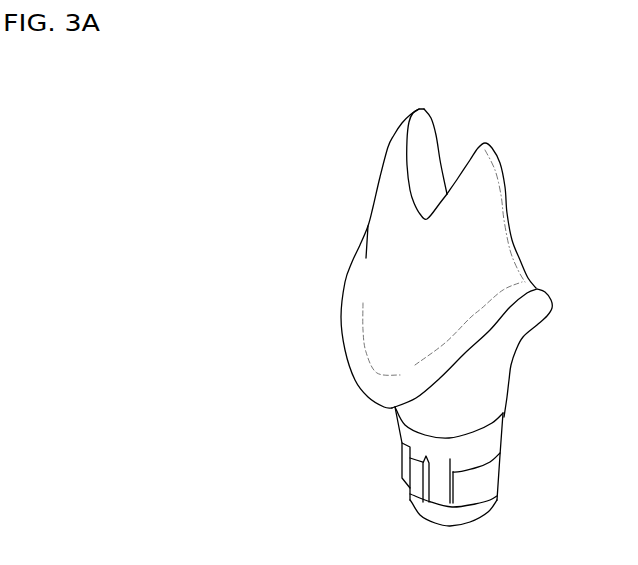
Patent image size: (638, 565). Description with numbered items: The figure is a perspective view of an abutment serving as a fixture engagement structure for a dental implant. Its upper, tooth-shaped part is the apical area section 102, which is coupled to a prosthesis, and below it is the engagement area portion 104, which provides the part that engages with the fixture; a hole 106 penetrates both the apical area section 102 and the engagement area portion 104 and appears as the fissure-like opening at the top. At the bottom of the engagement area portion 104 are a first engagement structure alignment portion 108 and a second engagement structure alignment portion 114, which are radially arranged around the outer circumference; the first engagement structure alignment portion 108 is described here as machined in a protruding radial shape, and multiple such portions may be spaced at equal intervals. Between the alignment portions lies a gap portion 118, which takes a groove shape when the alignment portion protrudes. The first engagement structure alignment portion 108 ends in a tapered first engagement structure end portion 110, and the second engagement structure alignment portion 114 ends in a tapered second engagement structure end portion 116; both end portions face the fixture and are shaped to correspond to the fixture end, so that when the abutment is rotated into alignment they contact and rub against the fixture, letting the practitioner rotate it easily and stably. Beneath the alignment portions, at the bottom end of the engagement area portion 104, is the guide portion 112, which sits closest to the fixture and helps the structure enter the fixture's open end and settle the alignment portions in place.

The apical area section 102 is at (490, 190).
The engagement area portion 104 is at (500, 375).
The hole 106 is at (455, 139).
The first engagement structure alignment portion 108 is at (411, 479).
The first engagement structure end portion 110 is at (413, 498).
The guide portion 112 is at (472, 513).
The second engagement structure alignment portion 114 is at (485, 482).
The second engagement structure end portion 116 is at (485, 503).
The gap portion 118 is at (437, 492).